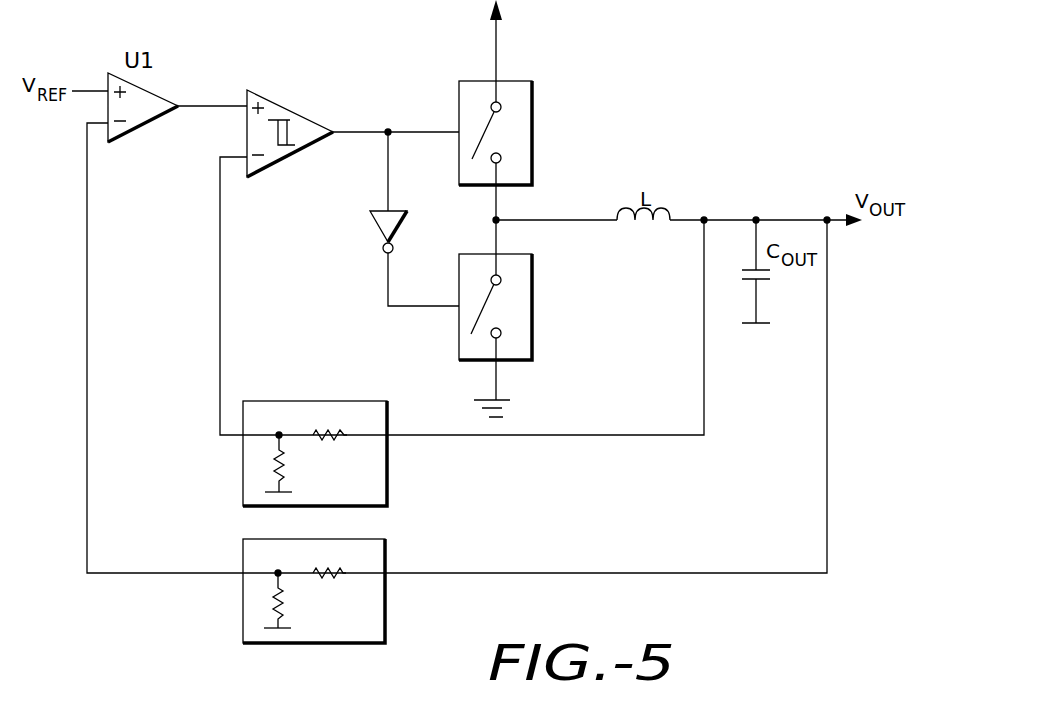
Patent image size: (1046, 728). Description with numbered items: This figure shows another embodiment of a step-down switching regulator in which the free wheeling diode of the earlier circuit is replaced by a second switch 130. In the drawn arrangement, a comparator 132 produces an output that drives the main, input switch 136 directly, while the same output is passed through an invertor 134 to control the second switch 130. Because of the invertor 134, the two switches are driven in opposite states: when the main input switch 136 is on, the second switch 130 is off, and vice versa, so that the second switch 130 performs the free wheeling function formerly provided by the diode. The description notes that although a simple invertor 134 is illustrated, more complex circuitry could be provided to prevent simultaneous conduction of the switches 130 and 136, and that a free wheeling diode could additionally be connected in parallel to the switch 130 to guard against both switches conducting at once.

The second switch 130 is at (550, 314).
The comparator 132 is at (302, 91).
The invertor 134 is at (355, 227).
The main input switch 136 is at (555, 92).